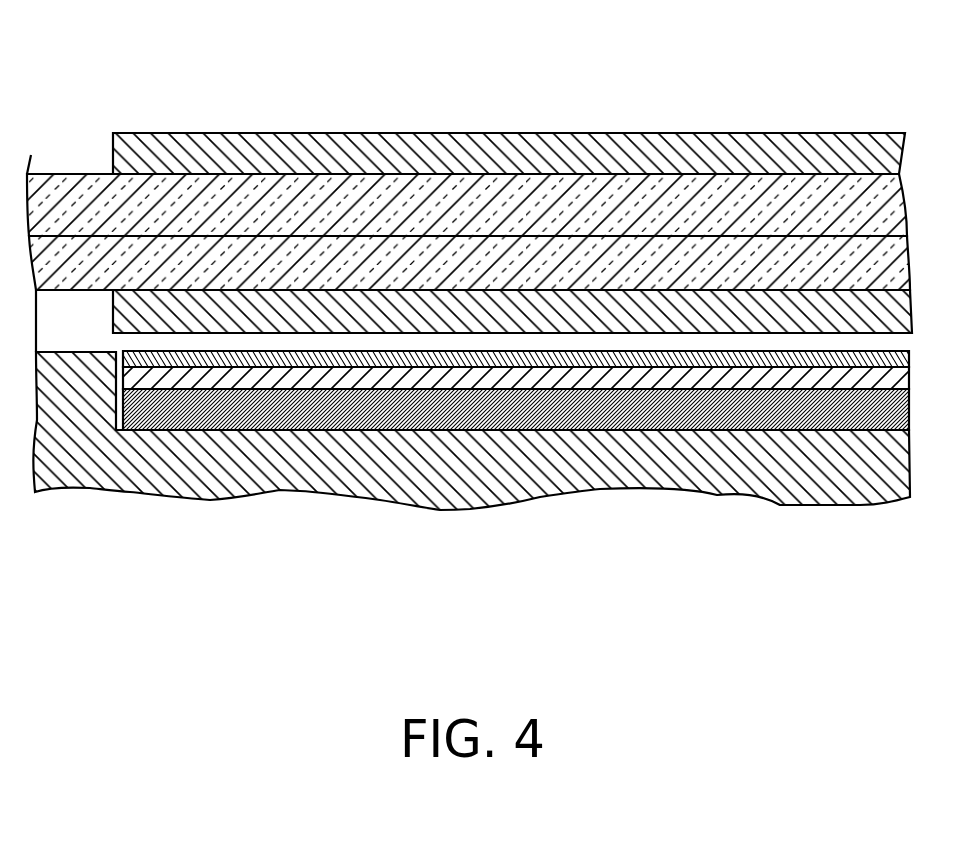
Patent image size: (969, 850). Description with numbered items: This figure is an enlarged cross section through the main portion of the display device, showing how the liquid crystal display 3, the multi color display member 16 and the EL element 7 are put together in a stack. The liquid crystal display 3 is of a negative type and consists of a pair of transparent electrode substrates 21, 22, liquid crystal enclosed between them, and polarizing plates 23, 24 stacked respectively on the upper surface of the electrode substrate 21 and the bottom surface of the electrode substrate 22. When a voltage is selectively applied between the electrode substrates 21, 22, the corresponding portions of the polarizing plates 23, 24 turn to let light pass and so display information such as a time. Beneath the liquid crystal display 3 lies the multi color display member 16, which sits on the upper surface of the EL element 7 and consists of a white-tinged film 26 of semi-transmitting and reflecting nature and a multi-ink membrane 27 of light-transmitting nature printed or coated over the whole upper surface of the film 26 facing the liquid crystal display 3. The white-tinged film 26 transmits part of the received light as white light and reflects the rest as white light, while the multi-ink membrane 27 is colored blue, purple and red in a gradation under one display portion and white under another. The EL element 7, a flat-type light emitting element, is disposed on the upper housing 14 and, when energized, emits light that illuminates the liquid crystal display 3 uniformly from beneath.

The liquid crystal display 3 is at (469, 179).
The EL element 7 is at (516, 471).
The upper housing 14 is at (140, 463).
The multi color display member 16 is at (615, 388).
The transparent electrode substrate 21 is at (452, 208).
The transparent electrode substrate 22 is at (648, 257).
The polarizing plate 23 is at (177, 129).
The polarizing plate 24 is at (795, 307).
The white-tinged film 26 is at (527, 380).
The multi-ink membrane 27 is at (289, 362).